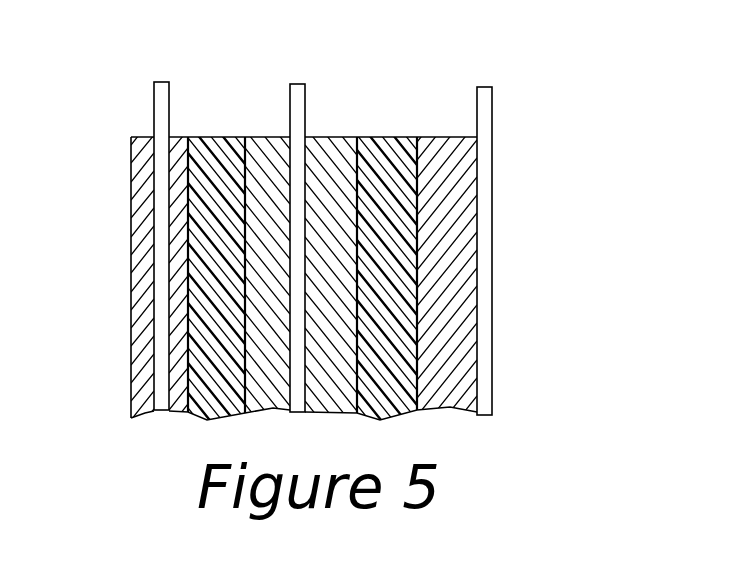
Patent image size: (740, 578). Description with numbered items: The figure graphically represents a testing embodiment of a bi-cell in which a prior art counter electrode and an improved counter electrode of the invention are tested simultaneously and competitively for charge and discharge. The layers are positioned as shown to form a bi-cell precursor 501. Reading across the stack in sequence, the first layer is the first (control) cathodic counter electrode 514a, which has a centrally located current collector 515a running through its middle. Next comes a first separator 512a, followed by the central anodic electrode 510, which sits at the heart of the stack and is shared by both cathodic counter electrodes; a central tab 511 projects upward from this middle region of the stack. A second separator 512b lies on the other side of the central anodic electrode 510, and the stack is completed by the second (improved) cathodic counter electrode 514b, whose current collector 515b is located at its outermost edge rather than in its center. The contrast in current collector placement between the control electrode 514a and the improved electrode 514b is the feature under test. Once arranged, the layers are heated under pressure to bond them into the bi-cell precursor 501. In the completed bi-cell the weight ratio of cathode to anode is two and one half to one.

The bi-cell precursor 501 is at (546, 292).
The central anodic electrode 510 is at (335, 172).
The central current collector tab 511 is at (297, 90).
The first separator 512a is at (208, 138).
The second separator 512b is at (390, 170).
The first (control) cathodic counter electrode 514a is at (140, 313).
The second (improved) cathodic counter electrode 514b is at (457, 208).
The current collector 515a is at (158, 215).
The current collector 515b is at (485, 153).